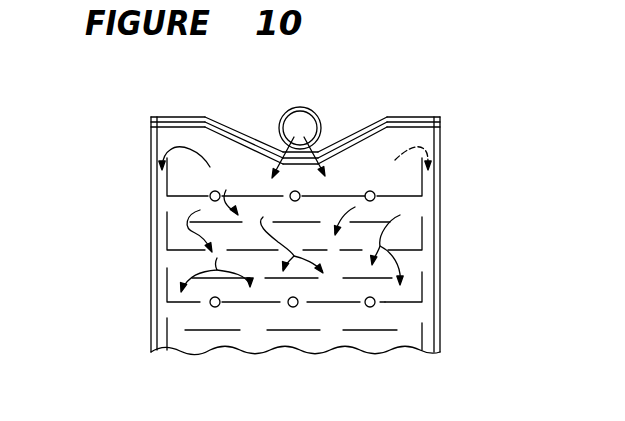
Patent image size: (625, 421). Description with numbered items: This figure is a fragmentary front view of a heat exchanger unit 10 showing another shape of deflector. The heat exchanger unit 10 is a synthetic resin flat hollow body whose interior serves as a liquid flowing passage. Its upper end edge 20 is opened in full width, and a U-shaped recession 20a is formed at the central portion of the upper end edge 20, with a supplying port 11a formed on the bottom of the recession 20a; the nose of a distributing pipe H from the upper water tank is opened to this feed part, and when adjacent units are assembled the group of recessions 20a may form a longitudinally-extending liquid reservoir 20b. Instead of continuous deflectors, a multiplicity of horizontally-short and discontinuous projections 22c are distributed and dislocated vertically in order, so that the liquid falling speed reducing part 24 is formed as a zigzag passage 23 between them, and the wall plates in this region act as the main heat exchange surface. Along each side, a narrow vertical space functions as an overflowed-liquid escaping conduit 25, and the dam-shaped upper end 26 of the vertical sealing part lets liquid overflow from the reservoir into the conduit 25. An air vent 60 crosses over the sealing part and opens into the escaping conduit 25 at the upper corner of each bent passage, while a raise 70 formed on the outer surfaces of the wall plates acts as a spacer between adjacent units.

The heat exchanger unit 10 is at (452, 130).
The upper end edge 20 is at (287, 115).
The U-shaped recession 20a is at (232, 126).
The longitudinally-extending liquid reservoir 20b is at (268, 143).
The distributing pipe H is at (323, 120).
The supplying port 11a is at (343, 185).
The upper end 26 is at (165, 184).
The air vent 60 is at (160, 205).
The overflowed-liquid escaping conduit 25 is at (162, 245).
The projections 22c is at (203, 328).
The raise 70 is at (375, 302).
The zigzag passage 23 is at (390, 313).
The liquid falling speed reducing part 24 is at (354, 343).